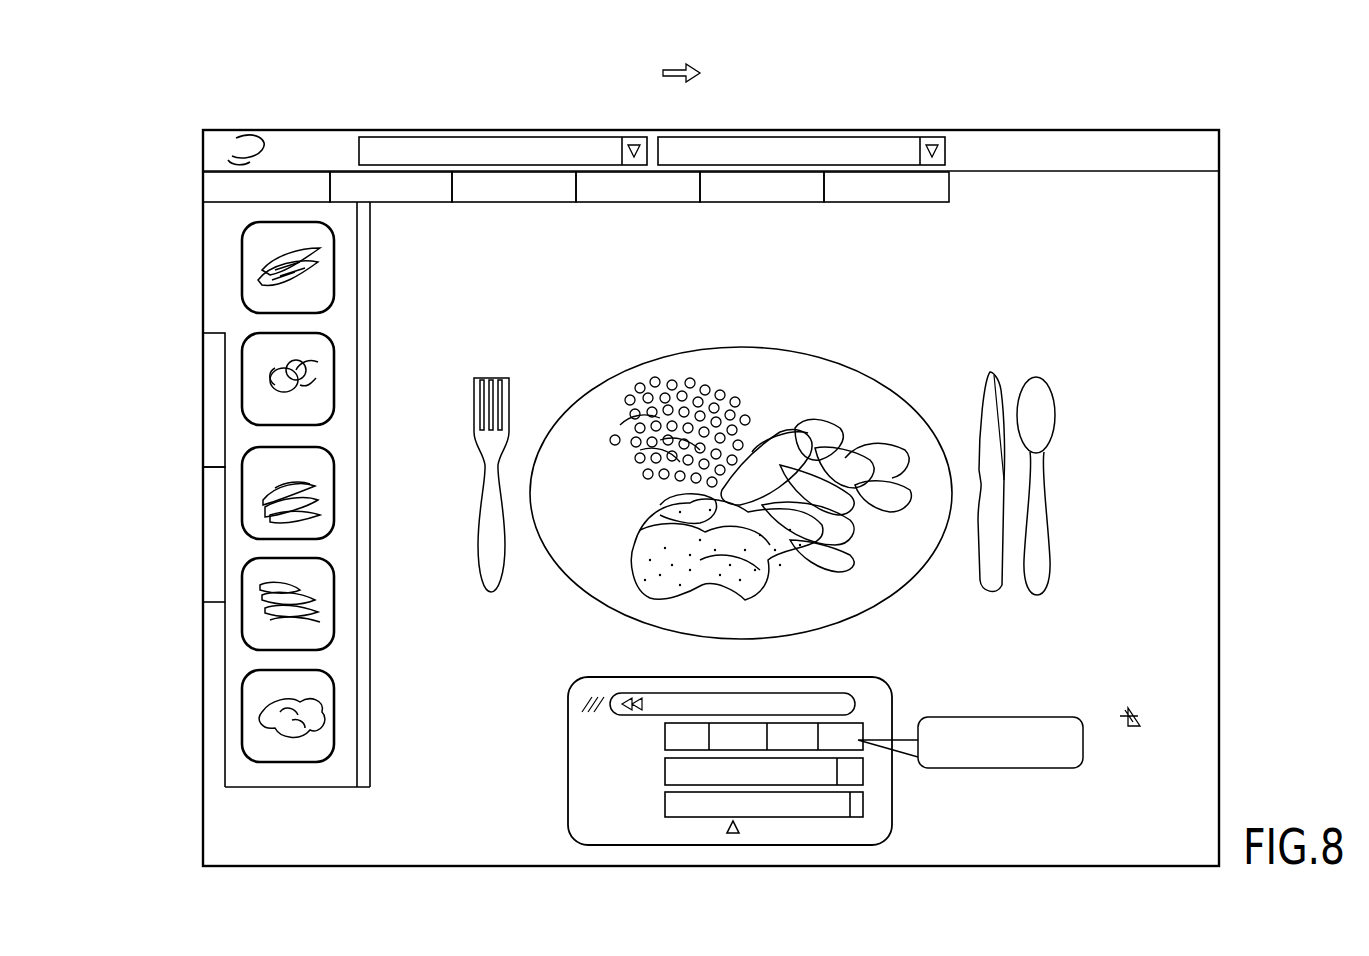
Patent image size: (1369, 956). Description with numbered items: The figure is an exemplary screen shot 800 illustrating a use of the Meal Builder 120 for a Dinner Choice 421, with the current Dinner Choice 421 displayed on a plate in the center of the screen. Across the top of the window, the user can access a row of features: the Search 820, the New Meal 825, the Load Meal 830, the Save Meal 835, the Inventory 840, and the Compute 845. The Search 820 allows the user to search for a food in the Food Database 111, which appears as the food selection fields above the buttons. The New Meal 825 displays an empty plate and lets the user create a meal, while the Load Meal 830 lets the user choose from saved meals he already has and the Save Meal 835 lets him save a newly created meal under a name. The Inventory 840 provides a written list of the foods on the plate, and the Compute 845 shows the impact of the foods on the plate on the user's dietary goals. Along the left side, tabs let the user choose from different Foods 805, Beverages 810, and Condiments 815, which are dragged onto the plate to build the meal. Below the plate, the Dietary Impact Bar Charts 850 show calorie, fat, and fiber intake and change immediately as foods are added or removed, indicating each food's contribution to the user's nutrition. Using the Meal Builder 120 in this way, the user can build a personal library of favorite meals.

The Food Database 111 is at (813, 148).
The Meal Builder 120 is at (1232, 322).
The Dinner Choice 421 is at (978, 333).
The screen shot 800 is at (1305, 148).
The Foods 805 is at (210, 241).
The Beverages 810 is at (205, 357).
The Condiments 815 is at (205, 482).
The Search 820 is at (208, 185).
The New Meal 825 is at (433, 197).
The Load Meal 830 is at (563, 197).
The Save Meal 835 is at (687, 197).
The Inventory 840 is at (810, 197).
The Compute 845 is at (930, 197).
The Dietary Impact Bar Charts 850 is at (622, 767).